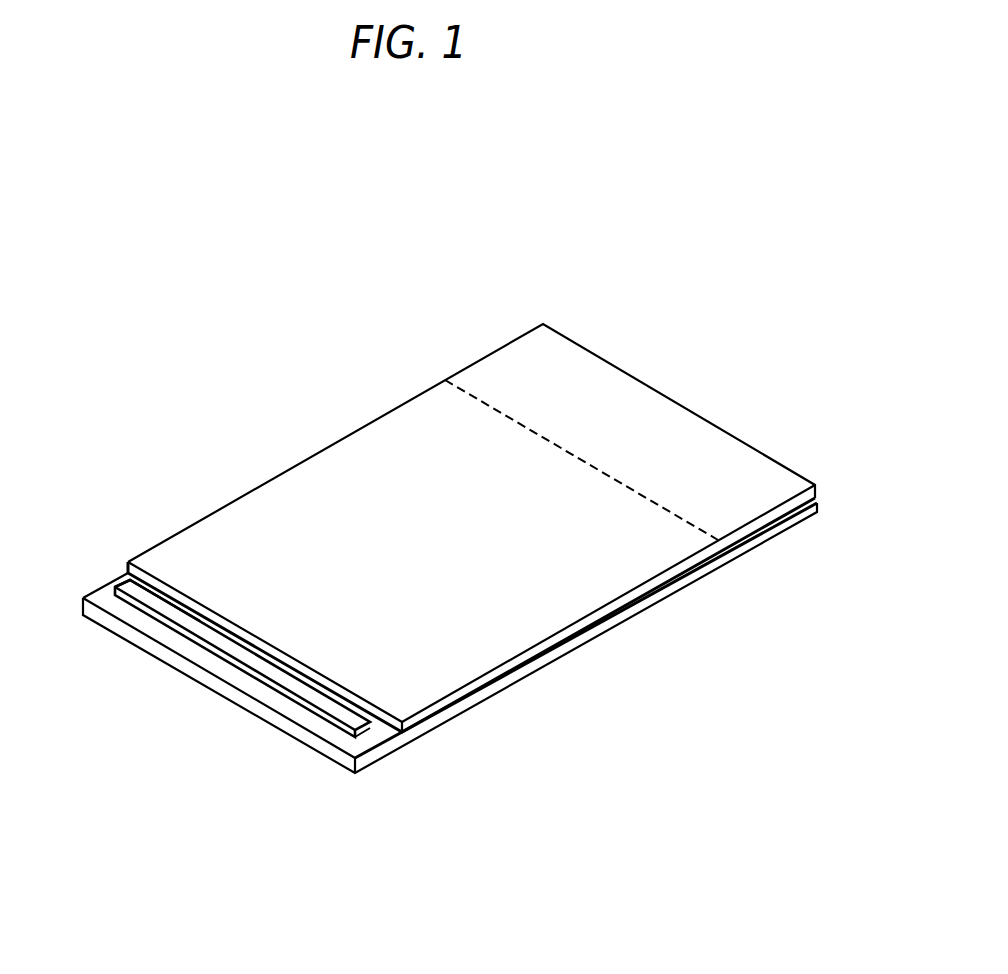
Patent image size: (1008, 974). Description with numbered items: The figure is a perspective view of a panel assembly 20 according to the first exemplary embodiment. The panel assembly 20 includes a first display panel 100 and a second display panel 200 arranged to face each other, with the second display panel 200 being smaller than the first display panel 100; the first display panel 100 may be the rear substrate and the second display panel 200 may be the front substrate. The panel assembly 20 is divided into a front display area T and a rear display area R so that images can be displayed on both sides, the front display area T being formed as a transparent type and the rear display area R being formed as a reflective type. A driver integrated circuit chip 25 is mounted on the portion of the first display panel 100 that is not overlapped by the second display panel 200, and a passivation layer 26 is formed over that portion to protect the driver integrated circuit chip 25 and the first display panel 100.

The panel assembly 20 is at (388, 360).
The driver integrated circuit (IC) chip 25 is at (120, 583).
The passivation layer 26 is at (236, 672).
The first display panel 100 is at (819, 506).
The second display panel 200 is at (816, 489).
The rear display area R is at (819, 516).
The front display area T is at (727, 570).